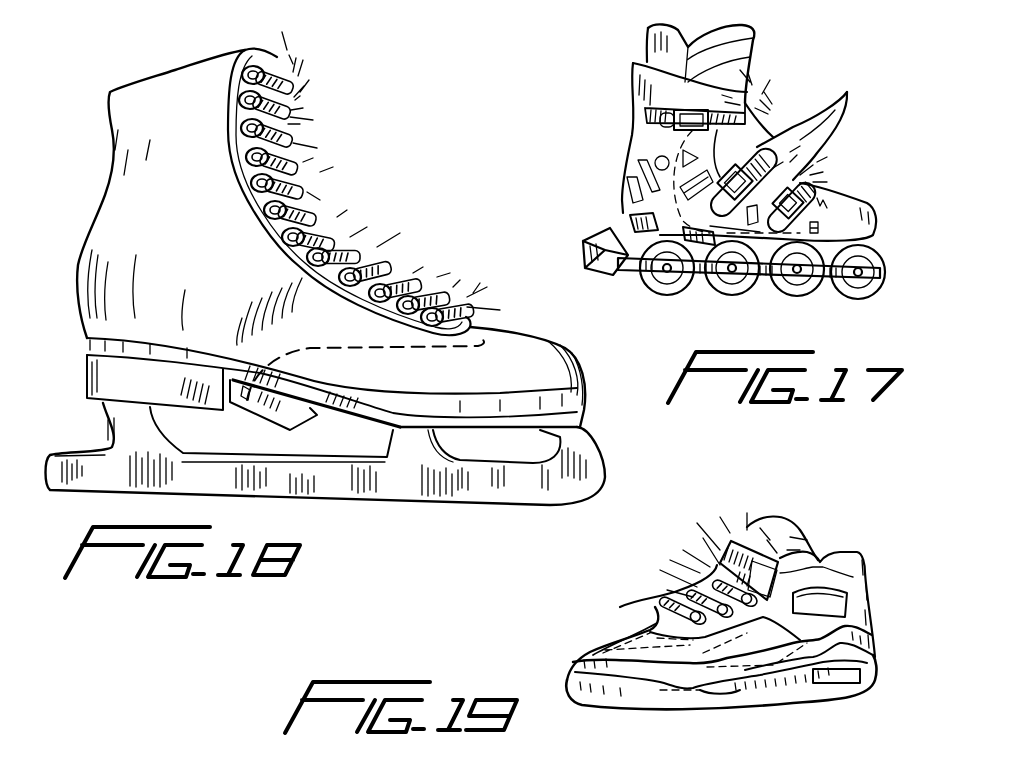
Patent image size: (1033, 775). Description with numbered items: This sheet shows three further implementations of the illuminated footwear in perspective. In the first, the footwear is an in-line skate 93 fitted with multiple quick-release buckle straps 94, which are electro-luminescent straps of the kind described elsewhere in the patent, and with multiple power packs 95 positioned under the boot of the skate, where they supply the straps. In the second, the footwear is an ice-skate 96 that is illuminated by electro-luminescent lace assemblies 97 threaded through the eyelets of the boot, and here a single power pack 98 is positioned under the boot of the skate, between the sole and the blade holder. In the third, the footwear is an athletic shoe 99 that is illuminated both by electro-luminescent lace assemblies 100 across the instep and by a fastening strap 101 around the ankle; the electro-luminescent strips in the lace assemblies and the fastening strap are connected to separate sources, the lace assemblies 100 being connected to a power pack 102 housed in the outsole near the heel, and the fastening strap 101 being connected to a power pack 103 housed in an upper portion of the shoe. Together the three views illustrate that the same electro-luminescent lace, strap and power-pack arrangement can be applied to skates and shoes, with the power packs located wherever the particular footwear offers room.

In FIG. 17, the in-line skate 93 is at (645, 132).
In FIG. 17, the quick-release buckle straps 94 is at (847, 93).
In FIG. 17, the power packs 95 is at (620, 191).
In FIG. 18, the ice-skate 96 is at (103, 242).
In FIG. 18, the electro-luminescent lace assemblies 97 is at (292, 179).
In FIG. 18, the power pack 98 is at (252, 394).
In FIG. 19, the athletic shoe 99 is at (650, 683).
In FIG. 19, the electro-luminescent lace assemblies 100 is at (660, 612).
In FIG. 19, the fastening strap 101 is at (745, 528).
In FIG. 19, the power pack 102 is at (837, 680).
In FIG. 19, the power pack 103 is at (828, 597).